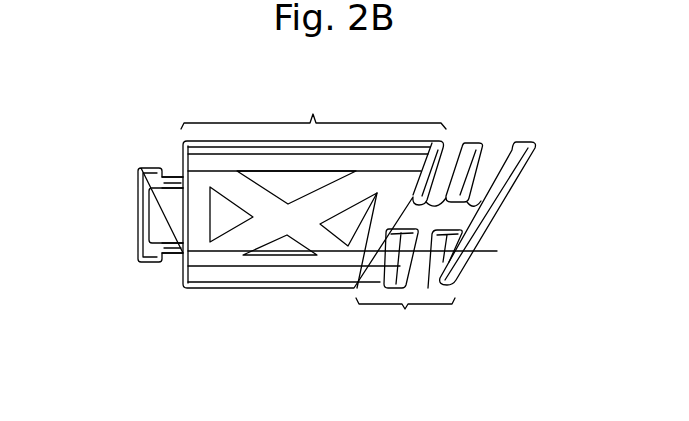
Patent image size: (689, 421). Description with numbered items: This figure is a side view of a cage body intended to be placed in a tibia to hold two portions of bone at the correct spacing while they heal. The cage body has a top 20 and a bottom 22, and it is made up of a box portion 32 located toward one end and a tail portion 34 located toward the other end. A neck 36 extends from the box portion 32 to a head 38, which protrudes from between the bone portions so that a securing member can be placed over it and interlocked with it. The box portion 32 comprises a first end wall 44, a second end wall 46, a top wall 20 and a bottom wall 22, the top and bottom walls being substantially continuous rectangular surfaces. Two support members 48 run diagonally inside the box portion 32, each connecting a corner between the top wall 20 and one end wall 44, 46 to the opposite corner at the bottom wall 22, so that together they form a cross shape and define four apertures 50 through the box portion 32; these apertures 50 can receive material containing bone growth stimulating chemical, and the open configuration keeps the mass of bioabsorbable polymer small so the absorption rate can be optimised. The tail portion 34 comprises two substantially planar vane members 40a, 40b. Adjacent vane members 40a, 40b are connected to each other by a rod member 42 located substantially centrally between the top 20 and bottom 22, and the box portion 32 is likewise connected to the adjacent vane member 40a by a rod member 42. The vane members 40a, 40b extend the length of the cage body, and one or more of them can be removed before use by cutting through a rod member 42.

The top 20 is at (445, 140).
The bottom 22 is at (250, 290).
The box portion 32 is at (313, 108).
The tail portion 34 is at (409, 288).
The neck 36 is at (176, 253).
The head 38 is at (137, 205).
The vane member 40a is at (481, 141).
The vane member 40b is at (526, 141).
The rod member 42 is at (428, 207).
The first end wall 44 is at (187, 182).
The second end wall 46 is at (400, 266).
The support member 48 is at (343, 198).
The aperture 50 is at (228, 226).